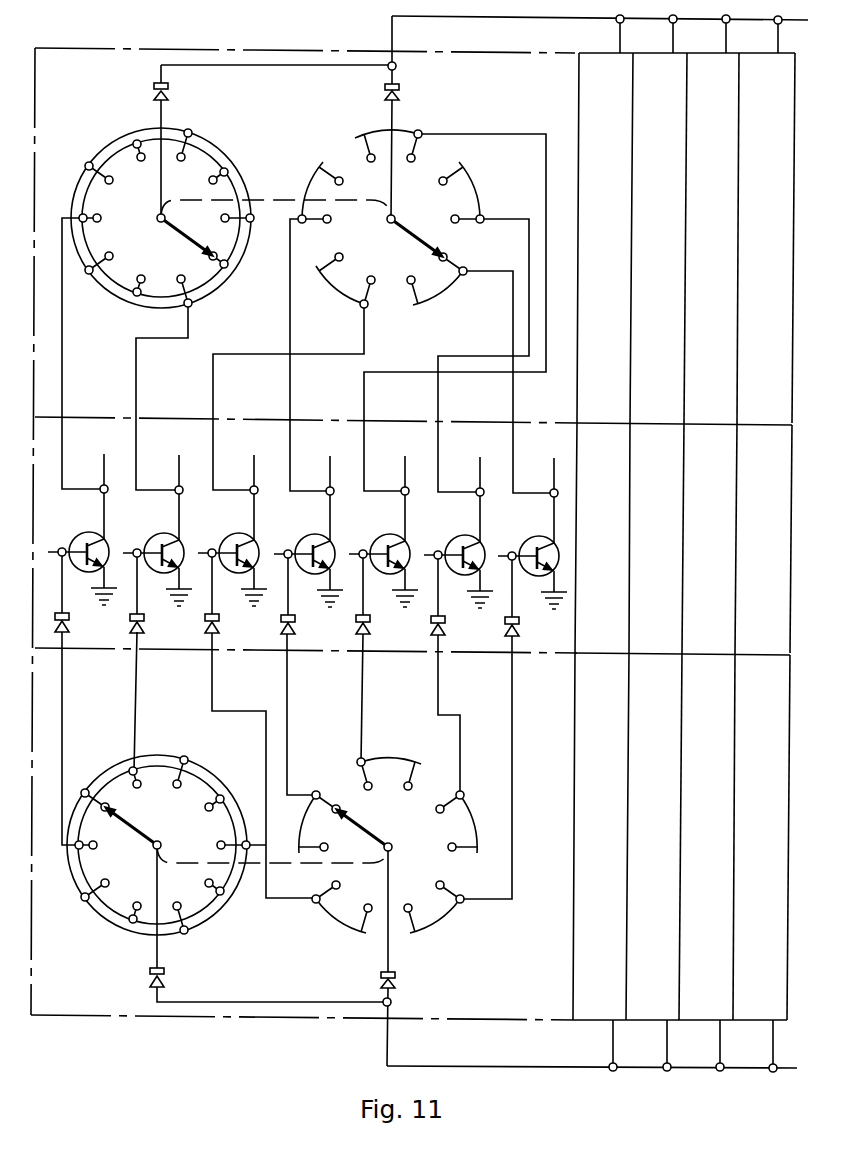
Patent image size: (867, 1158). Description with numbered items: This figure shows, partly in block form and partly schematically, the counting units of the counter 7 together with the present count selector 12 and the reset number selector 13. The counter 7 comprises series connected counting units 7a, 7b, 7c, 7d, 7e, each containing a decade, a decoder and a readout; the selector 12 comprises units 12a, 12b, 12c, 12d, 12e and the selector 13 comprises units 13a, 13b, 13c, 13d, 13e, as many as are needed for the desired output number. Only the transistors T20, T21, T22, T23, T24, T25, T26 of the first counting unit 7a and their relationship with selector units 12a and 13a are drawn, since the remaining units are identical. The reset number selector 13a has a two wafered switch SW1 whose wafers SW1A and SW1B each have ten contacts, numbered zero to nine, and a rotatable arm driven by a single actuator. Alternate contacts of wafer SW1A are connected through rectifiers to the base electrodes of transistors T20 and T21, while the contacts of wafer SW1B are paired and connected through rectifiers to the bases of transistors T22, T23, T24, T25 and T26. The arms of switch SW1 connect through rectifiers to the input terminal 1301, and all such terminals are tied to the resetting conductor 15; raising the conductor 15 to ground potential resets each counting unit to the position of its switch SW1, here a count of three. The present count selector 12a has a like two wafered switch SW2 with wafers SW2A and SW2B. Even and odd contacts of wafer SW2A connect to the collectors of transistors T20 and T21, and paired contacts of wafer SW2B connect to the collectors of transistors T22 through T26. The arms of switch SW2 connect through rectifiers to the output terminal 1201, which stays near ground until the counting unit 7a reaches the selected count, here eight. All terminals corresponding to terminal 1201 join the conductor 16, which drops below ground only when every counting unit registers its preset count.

The conductor 16 is at (390, 27).
The resetting bus or conductor 15 is at (386, 1056).
The output terminal 1201 is at (396, 68).
The input terminal 1301 is at (415, 992).
The selector 12 is at (591, 47).
The present count selector 12a is at (524, 103).
The selector unit 12b is at (618, 106).
The selector unit 12c is at (672, 106).
The selector unit 12d is at (725, 106).
The selector unit 12e is at (778, 106).
The counter 7 is at (660, 523).
The counting unit 7a is at (468, 481).
The counting unit 7b is at (611, 481).
The counting unit 7c is at (665, 481).
The counting unit 7d is at (719, 481).
The counting unit 7e is at (771, 481).
The selector 13 is at (584, 1043).
The reset number selector 13a is at (521, 950).
The selector unit 13b is at (613, 951).
The selector unit 13c is at (667, 951).
The selector unit 13d is at (721, 951).
The selector unit 13e is at (773, 951).
The transistor T20 is at (82, 543).
The transistor T21 is at (157, 544).
The transistor T22 is at (232, 544).
The transistor T23 is at (308, 545).
The transistor T24 is at (383, 545).
The transistor T25 is at (458, 546).
The transistor T26 is at (532, 547).
The two wafered switch SW1 is at (293, 975).
The wafer SW1A is at (212, 920).
The wafer SW1B is at (346, 923).
The two wafered switch SW2 is at (300, 114).
The wafer SW2A is at (224, 155).
The wafer SW2B is at (357, 138).